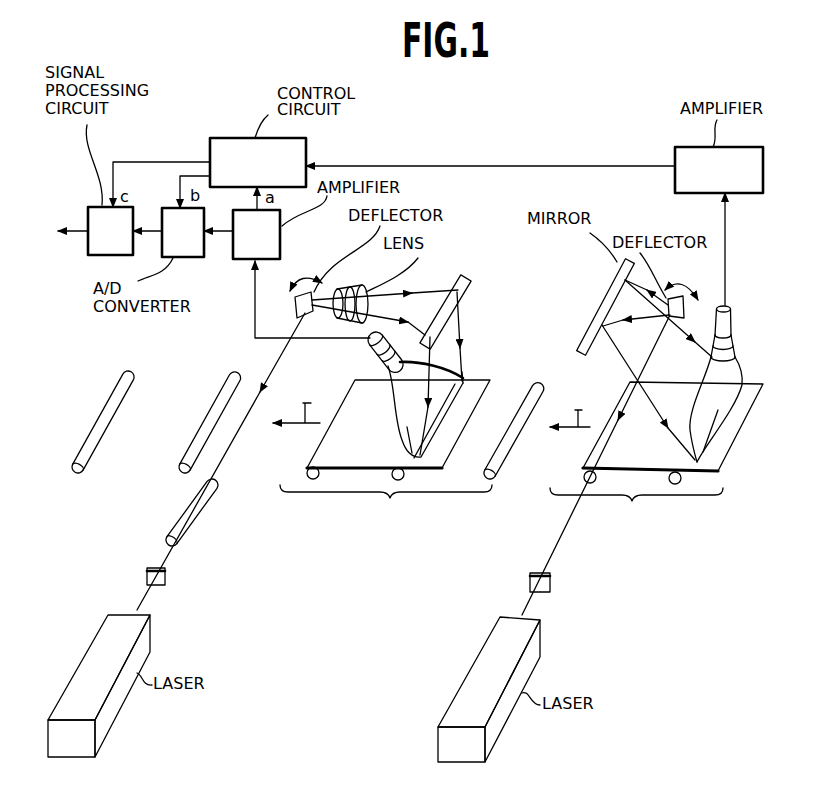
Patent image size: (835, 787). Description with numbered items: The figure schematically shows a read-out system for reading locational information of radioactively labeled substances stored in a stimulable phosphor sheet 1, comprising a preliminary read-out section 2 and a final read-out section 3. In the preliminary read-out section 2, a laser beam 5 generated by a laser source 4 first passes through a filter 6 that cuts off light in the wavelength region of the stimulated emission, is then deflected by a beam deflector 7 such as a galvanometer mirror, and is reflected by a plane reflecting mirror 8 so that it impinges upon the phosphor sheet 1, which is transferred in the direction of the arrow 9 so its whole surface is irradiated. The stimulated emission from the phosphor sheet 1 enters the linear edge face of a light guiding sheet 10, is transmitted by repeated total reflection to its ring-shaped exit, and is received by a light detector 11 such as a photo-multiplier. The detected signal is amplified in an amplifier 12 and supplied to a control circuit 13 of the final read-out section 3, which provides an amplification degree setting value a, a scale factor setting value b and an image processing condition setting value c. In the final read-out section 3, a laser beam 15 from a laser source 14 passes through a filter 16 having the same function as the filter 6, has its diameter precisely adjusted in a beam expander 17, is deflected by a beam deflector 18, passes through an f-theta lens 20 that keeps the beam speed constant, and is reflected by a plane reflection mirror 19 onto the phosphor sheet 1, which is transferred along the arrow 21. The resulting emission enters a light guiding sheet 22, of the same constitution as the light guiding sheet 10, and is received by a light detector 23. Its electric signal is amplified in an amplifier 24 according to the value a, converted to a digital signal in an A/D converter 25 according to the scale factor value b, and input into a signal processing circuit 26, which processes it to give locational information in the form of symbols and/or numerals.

The stimulable phosphor sheet 1 is at (452, 435).
The preliminary read-out section 2 is at (636, 506).
The final read-out section 3 is at (386, 505).
The laser source 4 is at (512, 697).
The laser beam 5 is at (533, 600).
The filter 6 is at (552, 582).
The beam deflector 7 is at (683, 280).
The plane reflecting mirror 8 is at (621, 274).
The arrow 9 is at (570, 408).
The light guiding sheet 10 is at (725, 378).
The light detector 11 is at (725, 337).
The amplifier 12 is at (719, 170).
The control circuit 13 is at (258, 162).
The laser source 14 is at (127, 680).
The laser beam 15 is at (147, 593).
The filter 16 is at (167, 575).
The beam expander 17 is at (194, 512).
The beam deflector 18 is at (312, 292).
The plane reflection mirror 19 is at (467, 279).
The f-theta lens 20 is at (350, 290).
The arrow 21 is at (299, 400).
The light guiding sheet 22 is at (445, 387).
The light detector 23 is at (374, 360).
The amplifier 24 is at (256, 234).
The A/D converter 25 is at (183, 232).
The signal processing circuit 26 is at (110, 231).